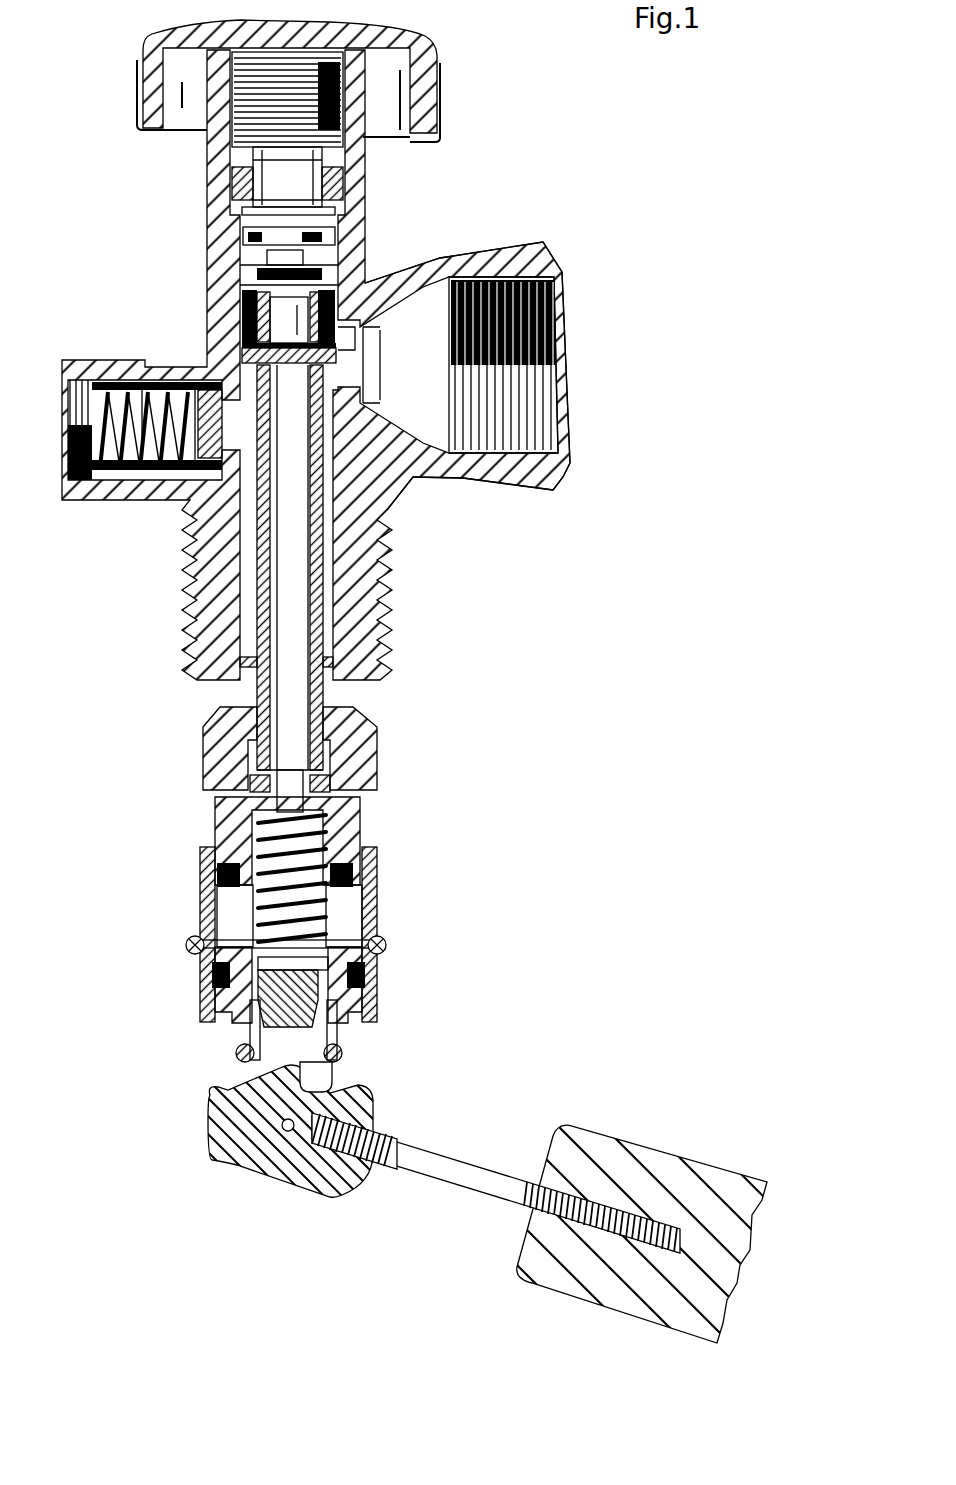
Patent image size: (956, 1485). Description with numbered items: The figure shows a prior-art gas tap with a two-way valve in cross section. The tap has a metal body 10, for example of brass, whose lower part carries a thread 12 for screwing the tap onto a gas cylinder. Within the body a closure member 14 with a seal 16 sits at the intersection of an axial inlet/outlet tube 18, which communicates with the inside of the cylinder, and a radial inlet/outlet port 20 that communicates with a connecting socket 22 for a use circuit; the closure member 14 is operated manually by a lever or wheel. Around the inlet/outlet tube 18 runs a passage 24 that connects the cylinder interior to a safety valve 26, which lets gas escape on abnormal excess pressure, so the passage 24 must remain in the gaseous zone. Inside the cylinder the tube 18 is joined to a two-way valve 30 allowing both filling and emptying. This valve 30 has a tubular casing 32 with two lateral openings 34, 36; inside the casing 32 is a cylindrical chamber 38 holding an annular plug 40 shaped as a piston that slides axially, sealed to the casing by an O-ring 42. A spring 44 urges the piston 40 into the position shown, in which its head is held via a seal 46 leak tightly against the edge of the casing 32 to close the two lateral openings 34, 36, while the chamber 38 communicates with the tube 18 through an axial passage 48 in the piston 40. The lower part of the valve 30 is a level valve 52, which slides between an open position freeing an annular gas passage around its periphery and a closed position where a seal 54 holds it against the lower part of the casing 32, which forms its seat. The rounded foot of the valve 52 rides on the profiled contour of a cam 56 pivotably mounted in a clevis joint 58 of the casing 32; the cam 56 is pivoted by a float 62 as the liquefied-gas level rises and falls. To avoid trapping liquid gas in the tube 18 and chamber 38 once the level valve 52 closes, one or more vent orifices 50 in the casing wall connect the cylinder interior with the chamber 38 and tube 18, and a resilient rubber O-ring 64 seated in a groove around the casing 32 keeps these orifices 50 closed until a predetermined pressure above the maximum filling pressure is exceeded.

The metal body 10 is at (340, 238).
The thread 12 is at (392, 594).
The closure member 14 is at (240, 308).
The seal 16 is at (240, 352).
The inlet/outlet tube 18 is at (325, 689).
The inlet/outlet port 20 is at (355, 325).
The connecting socket 22 is at (513, 258).
The passage 24 is at (248, 557).
The safety valve 26 is at (125, 490).
The two-way valve 30 is at (192, 921).
The tubular casing 32 is at (373, 858).
The lateral opening 34 is at (213, 845).
The lateral opening 36 is at (363, 858).
The cylindrical chamber 38 is at (347, 920).
The annular plug 40 is at (335, 790).
The O-ring 42 is at (215, 865).
The spring 44 is at (208, 905).
The seal 46 is at (347, 778).
The axial passage 48 is at (205, 740).
The vent orifices 50 is at (362, 933).
The level valve 52 is at (330, 1012).
The seal 54 is at (340, 1050).
The cam 56 is at (222, 1124).
The clevis joint 58 is at (322, 1080).
The float 62 is at (566, 1140).
The O-ring 64 is at (195, 948).